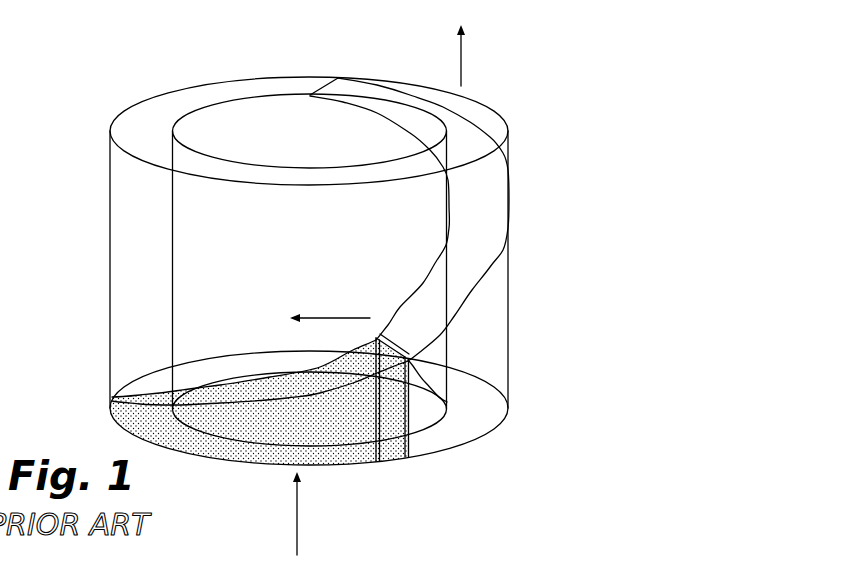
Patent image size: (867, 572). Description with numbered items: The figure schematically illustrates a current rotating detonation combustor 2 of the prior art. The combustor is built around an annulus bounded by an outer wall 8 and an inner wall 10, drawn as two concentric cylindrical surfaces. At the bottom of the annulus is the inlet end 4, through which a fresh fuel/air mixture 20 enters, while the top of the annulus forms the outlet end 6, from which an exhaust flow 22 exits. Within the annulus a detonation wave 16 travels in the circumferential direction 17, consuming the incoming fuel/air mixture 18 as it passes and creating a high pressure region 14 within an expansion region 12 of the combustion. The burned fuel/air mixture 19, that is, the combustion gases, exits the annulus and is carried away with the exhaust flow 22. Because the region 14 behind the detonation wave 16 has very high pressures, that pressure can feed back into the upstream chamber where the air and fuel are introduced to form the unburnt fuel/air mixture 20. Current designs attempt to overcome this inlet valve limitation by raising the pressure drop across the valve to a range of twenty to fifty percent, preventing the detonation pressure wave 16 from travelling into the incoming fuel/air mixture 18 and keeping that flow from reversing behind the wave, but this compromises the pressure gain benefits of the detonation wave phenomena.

The rotating detonation combustor 2 is at (322, 64).
The inlet end 4 is at (364, 509).
The outlet end 6 is at (248, 66).
The outer wall 8 is at (110, 157).
The inner wall 10 is at (322, 166).
The expansion region 12 is at (486, 258).
The high pressure region 14 is at (471, 411).
The detonation wave 16 is at (424, 452).
The circumferential direction 17 is at (340, 318).
The incoming fuel/air mixture 18 is at (297, 520).
The burned fuel/air mixture 19 is at (128, 265).
The fresh fuel/air mixture 20 is at (244, 456).
The exhaust flow 22 is at (461, 62).